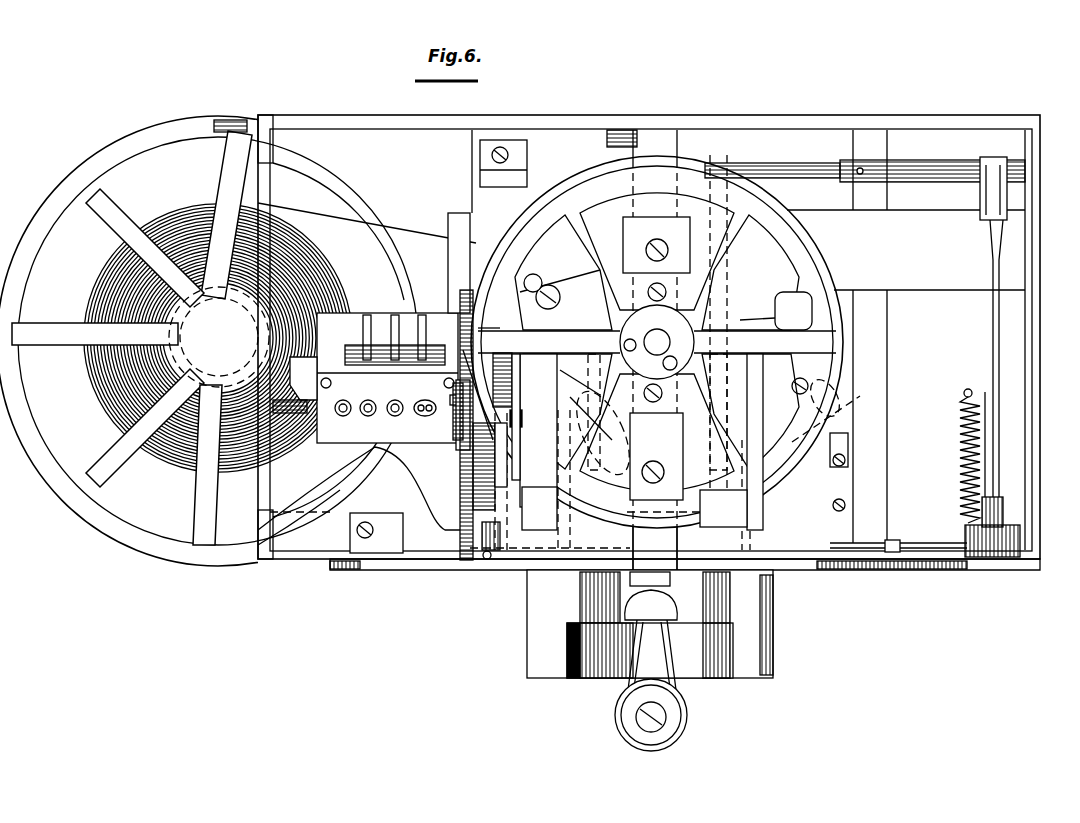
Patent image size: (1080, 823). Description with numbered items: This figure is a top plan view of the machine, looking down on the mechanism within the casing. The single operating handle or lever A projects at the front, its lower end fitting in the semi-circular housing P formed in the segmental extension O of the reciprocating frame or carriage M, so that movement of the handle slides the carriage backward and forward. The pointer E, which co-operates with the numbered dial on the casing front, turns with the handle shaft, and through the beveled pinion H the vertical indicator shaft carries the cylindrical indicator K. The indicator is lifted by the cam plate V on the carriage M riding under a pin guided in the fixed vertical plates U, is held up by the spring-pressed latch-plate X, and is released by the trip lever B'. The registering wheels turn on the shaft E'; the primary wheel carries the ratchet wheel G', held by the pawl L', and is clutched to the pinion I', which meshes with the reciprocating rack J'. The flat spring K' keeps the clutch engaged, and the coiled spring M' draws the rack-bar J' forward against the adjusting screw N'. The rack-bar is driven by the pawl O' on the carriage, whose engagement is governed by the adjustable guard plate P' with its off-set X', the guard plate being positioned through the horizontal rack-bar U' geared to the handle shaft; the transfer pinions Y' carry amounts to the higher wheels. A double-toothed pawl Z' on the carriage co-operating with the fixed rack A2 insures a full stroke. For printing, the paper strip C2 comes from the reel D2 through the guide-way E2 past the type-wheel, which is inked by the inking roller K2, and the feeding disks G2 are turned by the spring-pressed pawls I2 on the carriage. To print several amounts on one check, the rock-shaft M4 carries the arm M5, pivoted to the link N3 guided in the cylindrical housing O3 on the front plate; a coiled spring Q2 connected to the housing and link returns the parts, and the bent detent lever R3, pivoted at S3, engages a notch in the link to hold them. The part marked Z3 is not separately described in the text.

The paper strip C2 is at (185, 478).
The indicator K is at (662, 342).
The latch-plate X is at (657, 323).
The off-set X' is at (511, 345).
The flat spring K' is at (499, 367).
The guide-way E2 is at (598, 270).
The inking roller K2 is at (564, 297).
The rock-shaft M4 is at (810, 170).
The plate Z3 is at (906, 250).
The arm M5 is at (984, 200).
The link N3 is at (992, 320).
The spring Q2 is at (962, 455).
The cylindrical housing O3 is at (1020, 536).
The detent lever R3 is at (925, 555).
The pivot S3 is at (886, 545).
The fixed rack A2 is at (833, 420).
The double-toothed pawl Z' is at (824, 409).
The cam plate V is at (762, 418).
The trip lever B' is at (776, 311).
The adjustable guard plate P' is at (528, 417).
The pawl O' is at (533, 430).
The fixed vertical plates U is at (603, 412).
The horizontal rack-bar U' is at (712, 412).
The feeding disks G2 is at (603, 433).
The spring-pressed pawls I2 is at (600, 437).
The reciprocating frame M is at (632, 519).
The shaft E' is at (668, 549).
The transfer pinions Y' is at (387, 378).
The pawl L' is at (433, 355).
The beveled pinion H is at (455, 400).
The ratchet wheel G' is at (447, 415).
The rack-bar J' is at (461, 380).
The coiled spring M' is at (462, 466).
The adjusting screw N' is at (471, 491).
The pointer E is at (295, 401).
The reel D2 is at (365, 452).
The segmental extension O is at (661, 624).
The semi-circular housing P is at (659, 650).
The operating handle A is at (668, 600).
The pinion I' is at (473, 395).